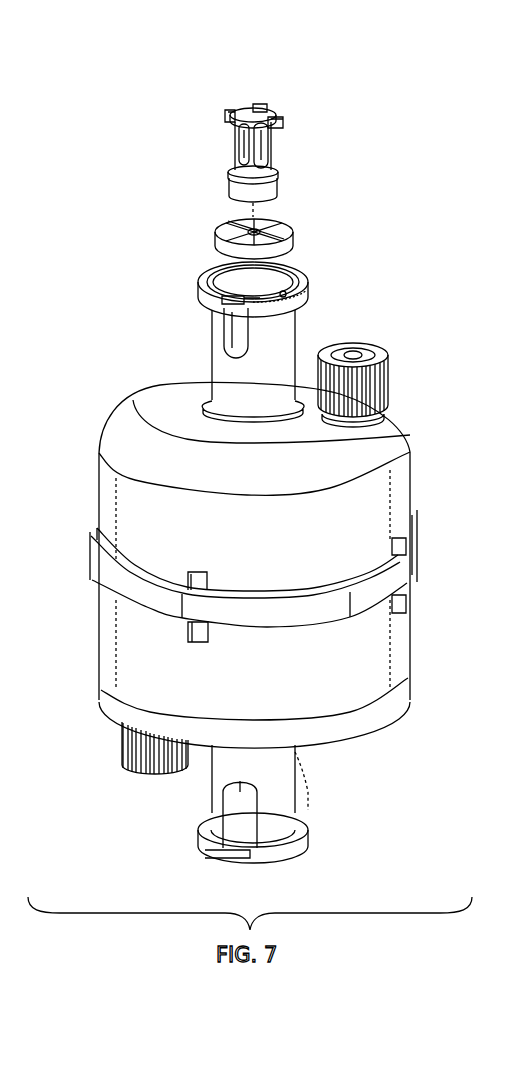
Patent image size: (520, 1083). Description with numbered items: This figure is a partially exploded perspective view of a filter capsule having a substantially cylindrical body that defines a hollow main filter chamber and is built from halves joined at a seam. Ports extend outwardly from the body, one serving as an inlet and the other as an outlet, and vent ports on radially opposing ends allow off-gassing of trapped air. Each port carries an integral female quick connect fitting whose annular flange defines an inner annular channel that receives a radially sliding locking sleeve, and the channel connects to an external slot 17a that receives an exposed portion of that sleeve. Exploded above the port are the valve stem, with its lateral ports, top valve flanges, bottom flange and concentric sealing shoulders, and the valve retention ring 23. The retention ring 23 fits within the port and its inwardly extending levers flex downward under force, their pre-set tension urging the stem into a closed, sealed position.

The external slot 17a is at (278, 264).
The valve retention ring 23 is at (280, 231).